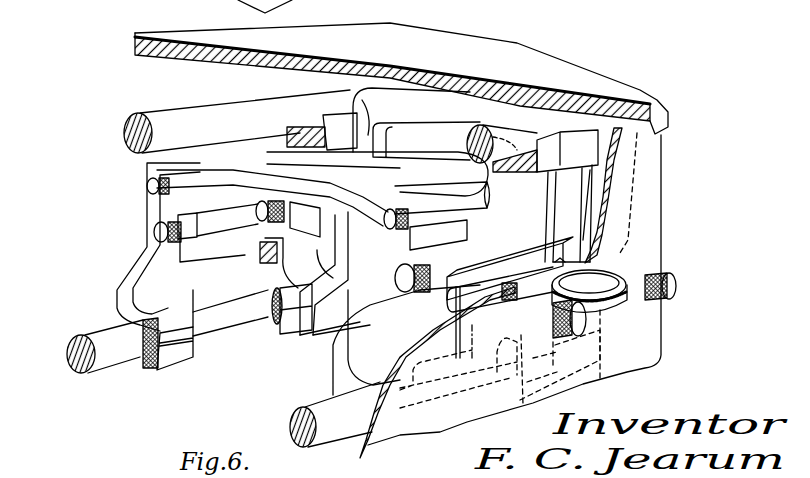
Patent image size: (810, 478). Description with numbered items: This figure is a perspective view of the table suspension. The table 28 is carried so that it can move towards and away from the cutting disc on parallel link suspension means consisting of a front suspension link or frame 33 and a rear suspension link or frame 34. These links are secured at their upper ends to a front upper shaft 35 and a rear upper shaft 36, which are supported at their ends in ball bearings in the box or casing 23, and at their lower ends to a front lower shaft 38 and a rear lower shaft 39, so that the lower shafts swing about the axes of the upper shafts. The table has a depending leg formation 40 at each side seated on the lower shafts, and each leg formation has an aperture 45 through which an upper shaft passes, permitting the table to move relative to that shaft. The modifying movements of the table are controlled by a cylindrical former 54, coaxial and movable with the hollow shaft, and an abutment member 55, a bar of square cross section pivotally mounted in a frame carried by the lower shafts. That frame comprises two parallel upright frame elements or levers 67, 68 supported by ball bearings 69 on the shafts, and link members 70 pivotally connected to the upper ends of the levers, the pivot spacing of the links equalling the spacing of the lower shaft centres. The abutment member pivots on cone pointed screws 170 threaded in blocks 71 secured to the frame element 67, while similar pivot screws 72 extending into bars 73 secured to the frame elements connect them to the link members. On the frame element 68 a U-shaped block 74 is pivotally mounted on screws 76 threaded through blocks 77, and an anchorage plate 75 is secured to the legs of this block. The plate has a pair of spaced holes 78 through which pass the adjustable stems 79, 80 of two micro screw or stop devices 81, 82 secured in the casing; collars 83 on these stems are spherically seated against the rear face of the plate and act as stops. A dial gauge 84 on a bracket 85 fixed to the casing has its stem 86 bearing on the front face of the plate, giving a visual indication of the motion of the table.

The box or casing 23 is at (645, 223).
The table 28 is at (401, 78).
The front suspension link or frame 33 is at (545, 196).
The rear suspension link or frame 34 is at (306, 268).
The front upper shaft 35 is at (517, 127).
The rear upper shaft 36 is at (237, 121).
The front lower shaft 38 is at (337, 410).
The rear lower shaft 39 is at (105, 346).
The depending leg formation 40 is at (432, 117).
The aperture 45 is at (382, 150).
The cylindrical former 54 is at (230, 313).
The abutment member 55 is at (207, 230).
The upright frame element or lever 67 is at (148, 265).
The upright frame element or lever 68 is at (406, 340).
The ball bearing 69 is at (150, 368).
The link member 70 is at (322, 188).
The block 71 is at (178, 243).
The pivot screw 72 is at (150, 183).
The bar 73 is at (255, 160).
The U-shaped block 74 is at (438, 238).
The anchorage plate 75 is at (487, 278).
The screw 76 is at (362, 303).
The block 77 is at (404, 296).
The hole 78 is at (557, 262).
The adjustable stem 79 is at (452, 333).
The adjustable stem 80 is at (558, 260).
The micro screw or stop device 81 is at (543, 310).
The micro screw or stop device 82 is at (628, 273).
The collar 83 is at (447, 303).
The dial gauge 84 is at (620, 293).
The bracket 85 is at (608, 320).
The stem of the dial gauge 86 is at (510, 273).
The cone pointed screw 170 is at (155, 228).